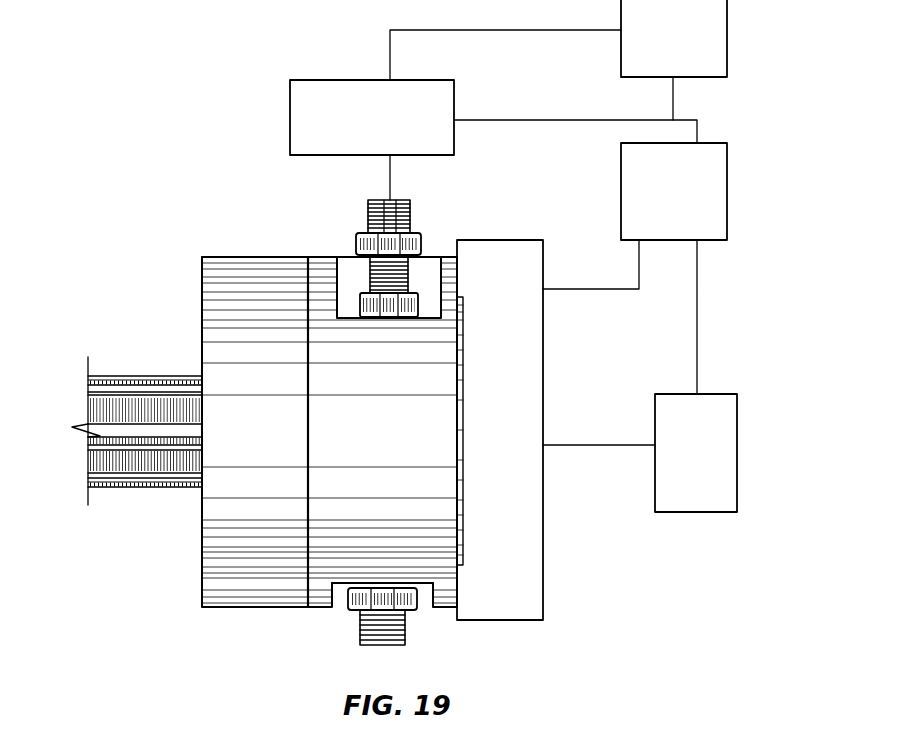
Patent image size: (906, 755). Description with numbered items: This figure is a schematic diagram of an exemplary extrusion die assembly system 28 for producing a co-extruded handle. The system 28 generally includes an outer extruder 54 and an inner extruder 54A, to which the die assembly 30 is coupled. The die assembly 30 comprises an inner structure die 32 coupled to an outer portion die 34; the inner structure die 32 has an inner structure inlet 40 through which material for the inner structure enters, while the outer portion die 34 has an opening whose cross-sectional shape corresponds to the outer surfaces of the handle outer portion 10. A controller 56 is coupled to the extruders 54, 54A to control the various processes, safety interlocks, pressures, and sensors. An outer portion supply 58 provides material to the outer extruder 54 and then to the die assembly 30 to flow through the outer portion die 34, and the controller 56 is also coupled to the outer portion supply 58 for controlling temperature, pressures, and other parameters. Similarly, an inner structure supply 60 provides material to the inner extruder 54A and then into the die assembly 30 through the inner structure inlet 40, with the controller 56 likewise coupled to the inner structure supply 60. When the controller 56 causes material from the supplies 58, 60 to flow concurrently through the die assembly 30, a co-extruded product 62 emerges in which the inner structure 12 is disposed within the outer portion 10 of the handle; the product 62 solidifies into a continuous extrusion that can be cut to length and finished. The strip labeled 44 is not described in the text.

The handle outer portion 10 is at (182, 487).
The inner structure 12 is at (130, 397).
The extrusion die assembly system 28 is at (213, 200).
The die assembly 30 is at (318, 613).
The inner structure die 32 is at (460, 567).
The outer portion die 34 is at (202, 287).
The inner structure inlet 40 is at (388, 200).
The sensor strip 44 is at (463, 497).
The outer extruder 54 is at (525, 625).
The inner extruder 54A is at (454, 97).
The controller 56 is at (727, 183).
The outer portion supply 58 is at (737, 442).
The inner structure supply 60 is at (727, 20).
The co-extruded product 62 is at (110, 497).